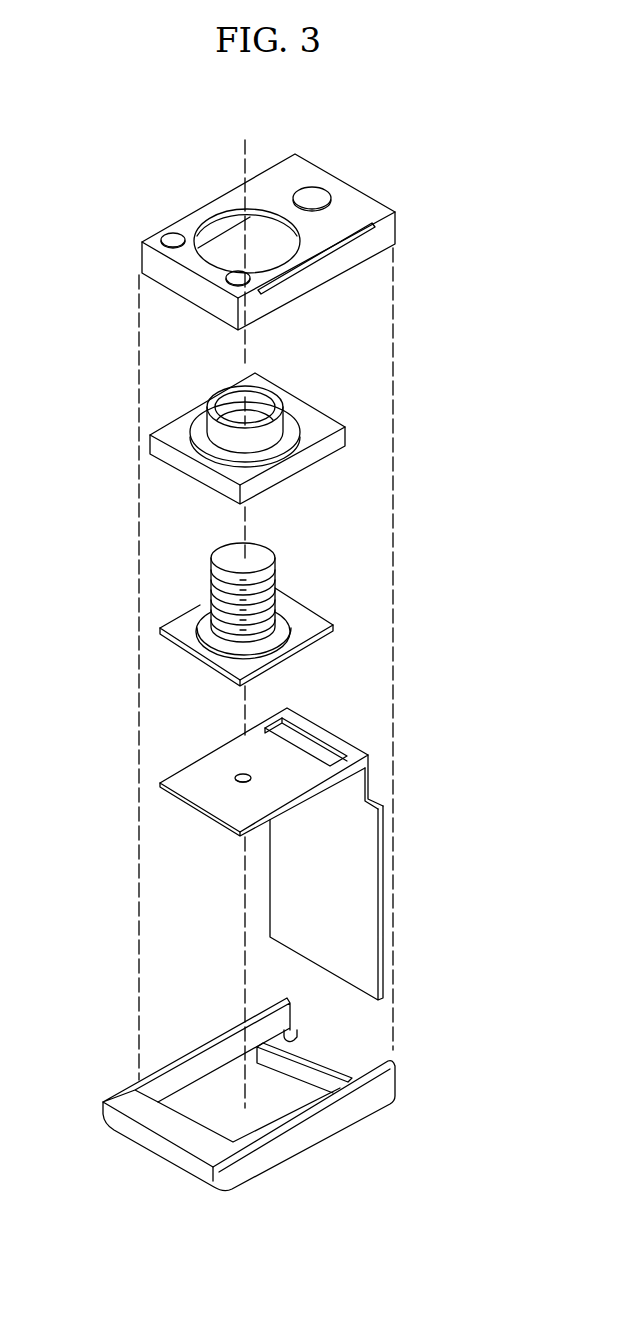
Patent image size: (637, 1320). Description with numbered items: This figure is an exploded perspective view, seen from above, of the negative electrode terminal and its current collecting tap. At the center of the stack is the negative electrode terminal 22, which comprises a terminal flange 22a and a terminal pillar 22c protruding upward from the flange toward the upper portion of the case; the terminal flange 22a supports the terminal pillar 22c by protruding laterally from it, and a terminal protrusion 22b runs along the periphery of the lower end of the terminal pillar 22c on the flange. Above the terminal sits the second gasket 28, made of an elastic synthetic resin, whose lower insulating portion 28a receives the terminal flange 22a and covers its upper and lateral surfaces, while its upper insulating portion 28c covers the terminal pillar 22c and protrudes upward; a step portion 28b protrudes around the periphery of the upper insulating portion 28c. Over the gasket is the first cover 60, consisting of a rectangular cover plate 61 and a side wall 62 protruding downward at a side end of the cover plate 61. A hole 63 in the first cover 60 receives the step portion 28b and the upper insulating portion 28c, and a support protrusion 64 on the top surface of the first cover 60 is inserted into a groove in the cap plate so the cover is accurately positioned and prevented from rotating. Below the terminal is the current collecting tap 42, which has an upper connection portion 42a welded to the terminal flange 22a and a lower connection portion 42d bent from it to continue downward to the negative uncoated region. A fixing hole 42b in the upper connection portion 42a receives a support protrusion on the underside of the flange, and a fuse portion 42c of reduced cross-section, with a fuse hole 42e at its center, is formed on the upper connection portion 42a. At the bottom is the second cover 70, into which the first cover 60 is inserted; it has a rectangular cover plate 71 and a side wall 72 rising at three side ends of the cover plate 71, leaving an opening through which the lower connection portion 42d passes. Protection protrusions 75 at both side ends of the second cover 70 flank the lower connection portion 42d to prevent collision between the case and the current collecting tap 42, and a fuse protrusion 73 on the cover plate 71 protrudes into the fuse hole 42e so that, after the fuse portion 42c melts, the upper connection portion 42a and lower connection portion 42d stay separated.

The first cover 60 is at (284, 210).
The cover plate 61 is at (296, 178).
The side wall 62 is at (355, 253).
The hole 63 is at (208, 220).
The support protrusion 64 is at (318, 196).
The second gasket 28 is at (219, 426).
The lower insulating portion 28a is at (310, 430).
The step portion 28b is at (290, 418).
The upper insulating portion 28c is at (213, 430).
The negative electrode terminal 22 is at (220, 608).
The terminal flange 22a is at (303, 627).
The terminal protrusion 22b is at (282, 620).
The terminal pillar 22c is at (217, 592).
The current collecting tap 42 is at (268, 848).
The upper connection portion 42a is at (188, 782).
The fixing hole 42b is at (242, 776).
The fuse portion 42c is at (342, 767).
The lower connection portion 42d is at (358, 857).
The fuse hole 42e is at (313, 740).
The second cover 70 is at (289, 1088).
The cover plate 71 is at (263, 1112).
The side wall 72 is at (197, 1067).
The fuse protrusion 73 is at (312, 1068).
The protection protrusions 75 is at (283, 1020).